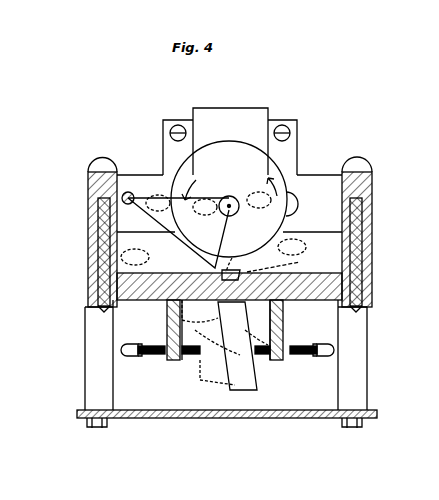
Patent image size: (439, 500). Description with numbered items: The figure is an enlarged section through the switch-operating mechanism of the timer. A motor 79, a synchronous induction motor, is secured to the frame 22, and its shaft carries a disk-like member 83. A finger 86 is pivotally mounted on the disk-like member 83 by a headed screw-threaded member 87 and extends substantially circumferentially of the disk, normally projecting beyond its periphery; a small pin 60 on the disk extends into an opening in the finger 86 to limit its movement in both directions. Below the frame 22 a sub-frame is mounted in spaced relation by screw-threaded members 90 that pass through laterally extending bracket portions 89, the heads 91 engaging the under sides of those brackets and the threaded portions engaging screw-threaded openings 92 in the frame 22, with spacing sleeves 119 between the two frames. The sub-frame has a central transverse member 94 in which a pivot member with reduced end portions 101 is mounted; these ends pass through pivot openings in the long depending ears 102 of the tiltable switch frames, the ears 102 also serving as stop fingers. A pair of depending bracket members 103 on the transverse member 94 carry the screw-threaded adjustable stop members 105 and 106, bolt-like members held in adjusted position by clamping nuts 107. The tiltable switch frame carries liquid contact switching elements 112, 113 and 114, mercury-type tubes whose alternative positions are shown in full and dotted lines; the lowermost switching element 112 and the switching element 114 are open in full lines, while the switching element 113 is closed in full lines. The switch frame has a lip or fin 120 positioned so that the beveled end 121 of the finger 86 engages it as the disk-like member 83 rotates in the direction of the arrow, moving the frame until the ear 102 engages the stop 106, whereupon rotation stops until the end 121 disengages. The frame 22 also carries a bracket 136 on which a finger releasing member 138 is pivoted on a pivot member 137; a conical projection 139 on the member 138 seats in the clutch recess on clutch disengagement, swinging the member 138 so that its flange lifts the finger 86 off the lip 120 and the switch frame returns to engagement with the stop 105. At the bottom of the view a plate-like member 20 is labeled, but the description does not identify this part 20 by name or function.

The base plate 20 is at (322, 420).
The frame 22 is at (95, 176).
The small pin 60 is at (158, 203).
The motor 79 is at (232, 125).
The disk-like member 83 is at (268, 175).
The finger 86 is at (259, 200).
The headed screw-threaded member 87 is at (205, 207).
The laterally extending bracket portions 89 is at (96, 284).
The screw-threaded members 90 is at (104, 250).
The heads 91 is at (100, 302).
The screw-threaded openings 92 is at (100, 212).
The central transverse member 94 is at (300, 304).
The reduced end portions 101 is at (278, 263).
The depending ears 102 is at (205, 390).
The depending bracket members 103 is at (226, 355).
The screw-threaded adjustable stop member 105 is at (330, 352).
The screw-threaded adjustable stop member 106 is at (127, 352).
The clamping nuts 107 is at (160, 358).
The liquid contact switching element 112 is at (283, 400).
The liquid contact switching element 113 is at (168, 345).
The liquid contact switching element 114 is at (172, 306).
The spacing sleeves 119 is at (98, 240).
The lip or fin 120 is at (232, 270).
The beveled end 121 is at (205, 264).
The bracket 136 is at (127, 192).
The pivot member 137 is at (132, 192).
The finger releasing member 138 is at (190, 203).
The conical projection 139 is at (232, 200).